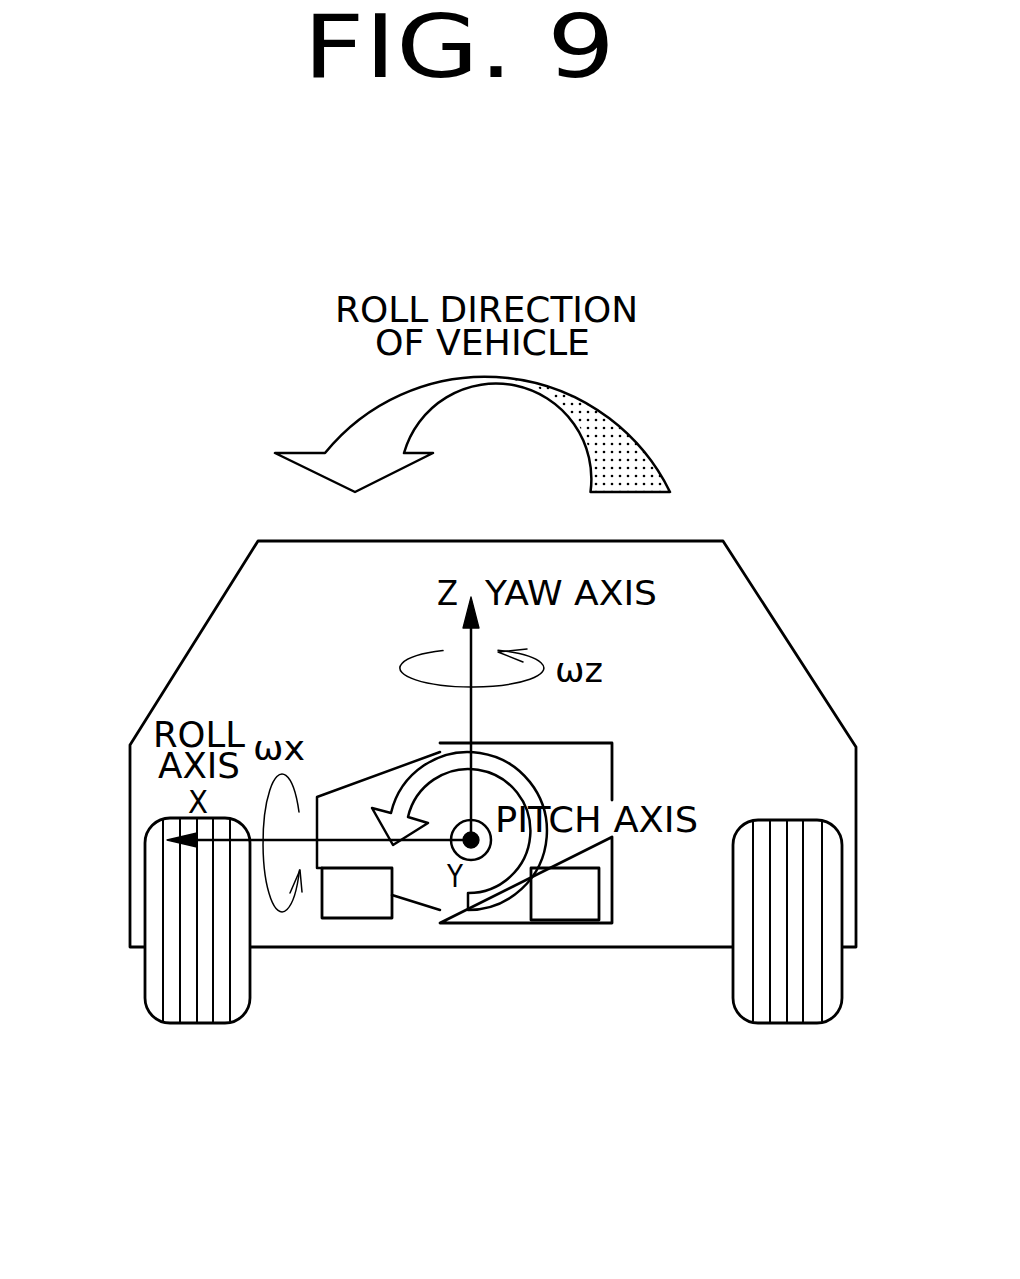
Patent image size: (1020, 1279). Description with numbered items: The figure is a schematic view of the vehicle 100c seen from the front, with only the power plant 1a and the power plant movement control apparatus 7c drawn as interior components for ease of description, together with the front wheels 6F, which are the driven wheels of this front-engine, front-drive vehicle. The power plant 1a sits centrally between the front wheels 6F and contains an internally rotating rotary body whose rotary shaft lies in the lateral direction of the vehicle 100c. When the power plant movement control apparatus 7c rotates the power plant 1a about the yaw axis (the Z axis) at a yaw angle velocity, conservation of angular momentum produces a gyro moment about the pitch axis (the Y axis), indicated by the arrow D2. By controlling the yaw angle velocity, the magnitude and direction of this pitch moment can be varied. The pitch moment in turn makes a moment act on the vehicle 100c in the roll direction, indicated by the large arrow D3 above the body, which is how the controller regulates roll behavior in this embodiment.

The vehicle 100c is at (140, 526).
The power plant 1a is at (600, 766).
The power plant movement control apparatus 7c is at (357, 902).
The front wheels 6F is at (200, 1023).
The arrow indicating gyro moment about the pitch axis D2 is at (432, 831).
The arrow indicating moment in the roll direction D3 is at (277, 453).